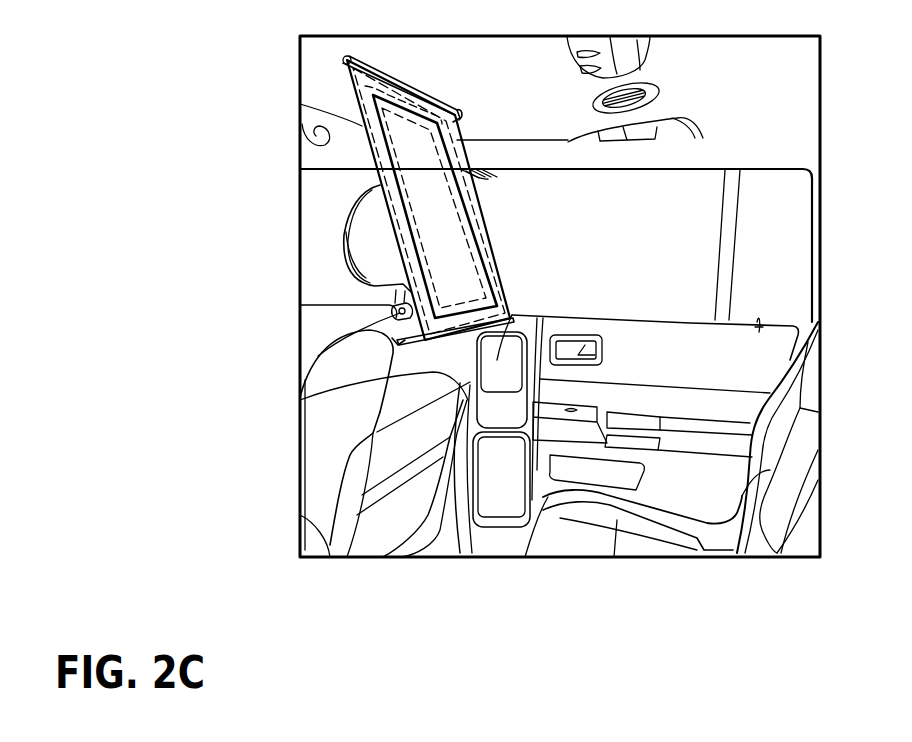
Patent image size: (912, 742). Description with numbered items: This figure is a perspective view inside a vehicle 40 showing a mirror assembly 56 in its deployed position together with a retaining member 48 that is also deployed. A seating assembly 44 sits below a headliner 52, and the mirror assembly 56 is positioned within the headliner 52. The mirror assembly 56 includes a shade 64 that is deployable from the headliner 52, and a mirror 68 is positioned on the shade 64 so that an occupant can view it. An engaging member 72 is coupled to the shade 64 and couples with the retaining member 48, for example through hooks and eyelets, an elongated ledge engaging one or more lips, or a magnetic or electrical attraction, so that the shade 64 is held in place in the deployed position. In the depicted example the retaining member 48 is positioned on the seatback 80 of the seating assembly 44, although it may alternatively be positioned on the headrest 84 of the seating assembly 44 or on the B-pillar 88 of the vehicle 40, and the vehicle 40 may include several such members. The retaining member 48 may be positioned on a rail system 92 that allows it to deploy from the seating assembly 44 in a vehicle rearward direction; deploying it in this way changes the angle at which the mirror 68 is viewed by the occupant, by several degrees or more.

The vehicle 40 is at (778, 83).
The seating assembly 44 is at (324, 213).
The retaining member 48 is at (345, 386).
The headliner 52 is at (528, 89).
The mirror assembly 56 is at (322, 77).
The shade 64 is at (358, 95).
The mirror 68 is at (410, 148).
The engaging member 72 is at (390, 317).
The seatback 80 is at (436, 381).
The headrest 84 is at (362, 253).
The B-pillar 88 is at (478, 175).
The rail system 92 is at (386, 363).